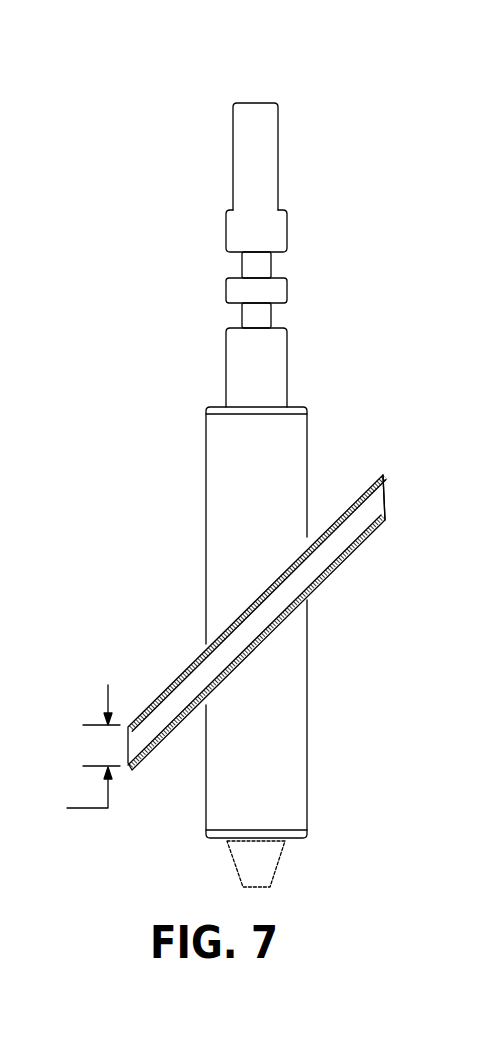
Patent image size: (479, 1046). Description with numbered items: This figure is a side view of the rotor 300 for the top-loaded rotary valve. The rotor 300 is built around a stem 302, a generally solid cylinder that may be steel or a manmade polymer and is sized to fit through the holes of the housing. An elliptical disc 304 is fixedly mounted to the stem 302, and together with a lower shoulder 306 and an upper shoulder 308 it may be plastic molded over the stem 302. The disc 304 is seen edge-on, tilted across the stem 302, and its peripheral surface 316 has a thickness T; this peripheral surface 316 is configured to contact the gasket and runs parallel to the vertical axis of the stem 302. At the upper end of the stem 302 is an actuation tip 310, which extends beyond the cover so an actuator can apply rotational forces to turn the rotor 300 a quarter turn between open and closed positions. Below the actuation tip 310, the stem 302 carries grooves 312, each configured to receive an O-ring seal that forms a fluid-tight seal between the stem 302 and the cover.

The rotor 300 is at (219, 103).
The stem 302 is at (287, 350).
The disc 304 is at (150, 703).
The lower shoulder 306 is at (307, 785).
The upper shoulder 308 is at (206, 441).
The actuation tip 310 is at (278, 123).
The grooves 312 is at (242, 262).
The peripheral surface 316 is at (384, 497).